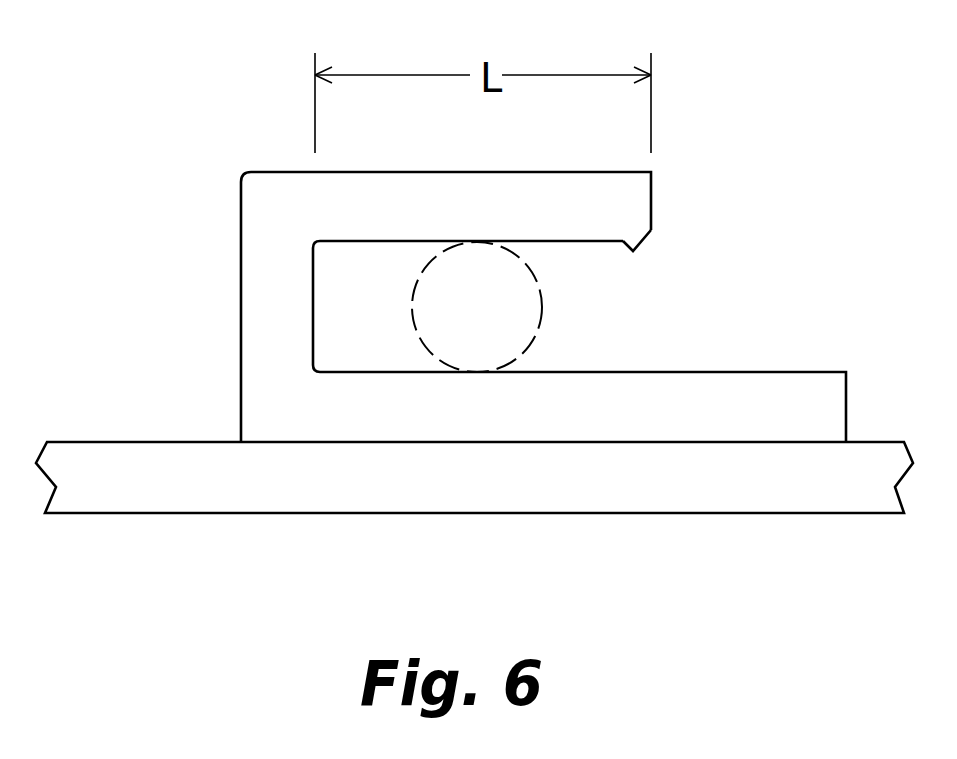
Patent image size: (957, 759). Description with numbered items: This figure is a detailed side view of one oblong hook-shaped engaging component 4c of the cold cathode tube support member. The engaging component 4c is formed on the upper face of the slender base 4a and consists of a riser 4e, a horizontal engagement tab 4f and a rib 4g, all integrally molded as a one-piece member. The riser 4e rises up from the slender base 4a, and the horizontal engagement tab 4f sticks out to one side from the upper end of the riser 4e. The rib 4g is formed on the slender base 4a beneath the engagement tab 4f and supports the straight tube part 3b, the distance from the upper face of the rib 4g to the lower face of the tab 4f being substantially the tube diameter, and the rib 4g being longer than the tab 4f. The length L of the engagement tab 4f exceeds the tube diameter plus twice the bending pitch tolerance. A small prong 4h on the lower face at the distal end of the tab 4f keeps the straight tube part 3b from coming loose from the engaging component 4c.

The slender base 4a is at (93, 440).
The oblong hook-shaped engaging component 4c is at (238, 160).
The riser 4e is at (257, 287).
The horizontal engagement tab 4f is at (382, 229).
The rib 4g is at (809, 378).
The prong 4h is at (630, 252).
The straight tube part 3b is at (545, 320).